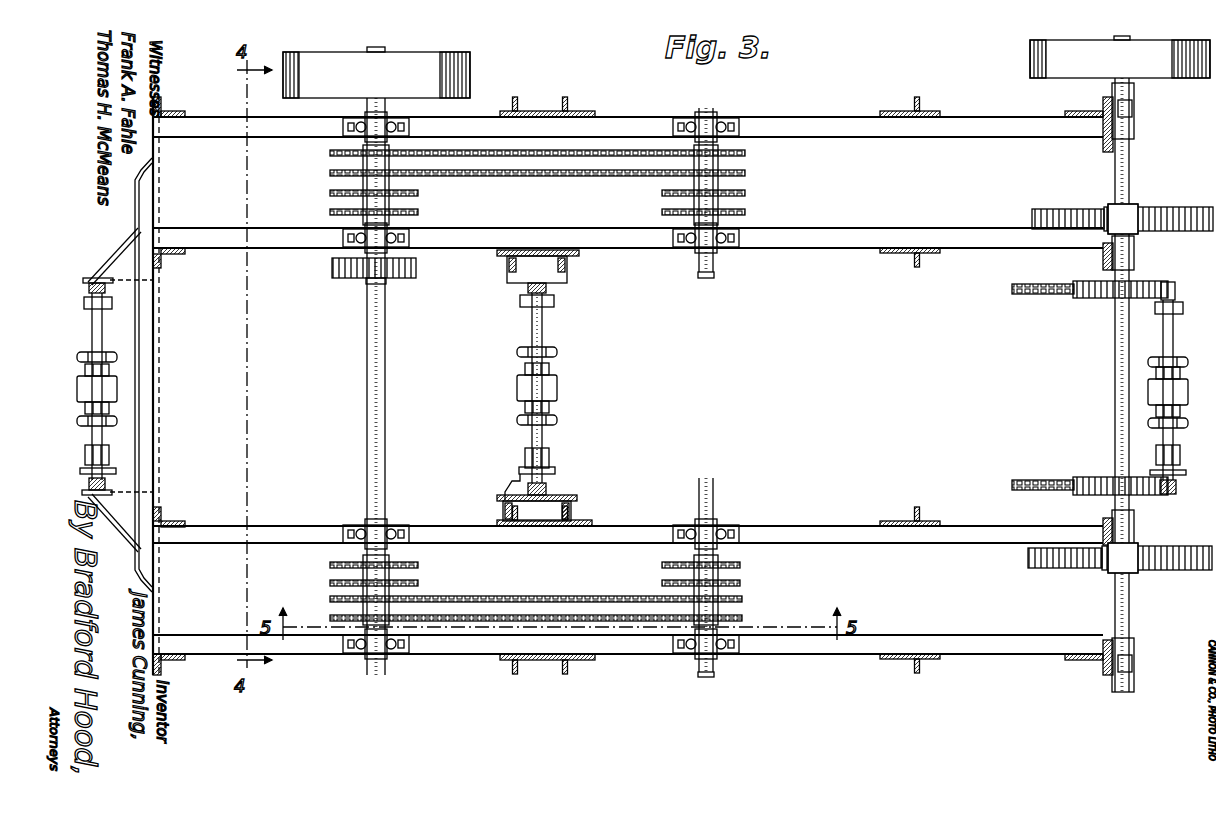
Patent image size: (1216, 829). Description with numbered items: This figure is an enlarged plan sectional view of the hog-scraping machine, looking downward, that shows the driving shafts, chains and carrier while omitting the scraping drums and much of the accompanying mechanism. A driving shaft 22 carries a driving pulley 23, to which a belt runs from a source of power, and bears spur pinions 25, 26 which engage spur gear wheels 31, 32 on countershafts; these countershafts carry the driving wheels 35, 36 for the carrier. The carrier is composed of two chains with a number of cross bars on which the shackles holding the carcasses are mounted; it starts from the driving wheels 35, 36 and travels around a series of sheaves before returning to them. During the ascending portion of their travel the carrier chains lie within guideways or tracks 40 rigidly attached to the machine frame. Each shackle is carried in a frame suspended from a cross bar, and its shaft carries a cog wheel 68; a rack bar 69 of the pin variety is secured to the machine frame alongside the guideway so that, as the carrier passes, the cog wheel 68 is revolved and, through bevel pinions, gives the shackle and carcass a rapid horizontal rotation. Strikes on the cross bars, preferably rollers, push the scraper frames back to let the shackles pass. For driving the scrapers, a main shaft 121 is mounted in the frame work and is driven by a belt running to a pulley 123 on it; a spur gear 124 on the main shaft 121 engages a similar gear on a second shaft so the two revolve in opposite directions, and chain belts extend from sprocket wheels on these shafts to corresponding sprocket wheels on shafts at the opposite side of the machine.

The driving shaft 22 is at (1115, 403).
The driving pulley 23 is at (1153, 80).
The spur pinion 25 is at (1106, 210).
The spur pinion 26 is at (1106, 570).
The spur gear wheel 31 is at (1032, 222).
The spur gear wheel 32 is at (1030, 566).
The driving wheel 35 is at (1097, 297).
The driving wheel 36 is at (1092, 478).
The guideway or track 40 is at (528, 288).
The cog wheel 68 is at (520, 470).
The rack bar 69 is at (514, 481).
The main shaft 121 is at (366, 192).
The pulley 123 is at (470, 62).
The spur gear 124 is at (332, 272).